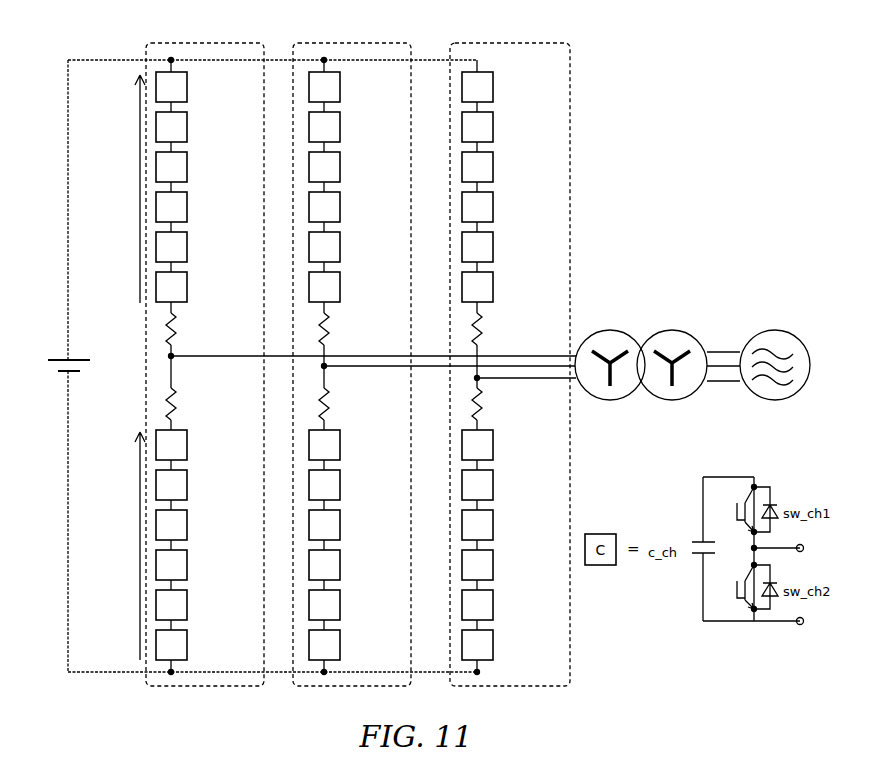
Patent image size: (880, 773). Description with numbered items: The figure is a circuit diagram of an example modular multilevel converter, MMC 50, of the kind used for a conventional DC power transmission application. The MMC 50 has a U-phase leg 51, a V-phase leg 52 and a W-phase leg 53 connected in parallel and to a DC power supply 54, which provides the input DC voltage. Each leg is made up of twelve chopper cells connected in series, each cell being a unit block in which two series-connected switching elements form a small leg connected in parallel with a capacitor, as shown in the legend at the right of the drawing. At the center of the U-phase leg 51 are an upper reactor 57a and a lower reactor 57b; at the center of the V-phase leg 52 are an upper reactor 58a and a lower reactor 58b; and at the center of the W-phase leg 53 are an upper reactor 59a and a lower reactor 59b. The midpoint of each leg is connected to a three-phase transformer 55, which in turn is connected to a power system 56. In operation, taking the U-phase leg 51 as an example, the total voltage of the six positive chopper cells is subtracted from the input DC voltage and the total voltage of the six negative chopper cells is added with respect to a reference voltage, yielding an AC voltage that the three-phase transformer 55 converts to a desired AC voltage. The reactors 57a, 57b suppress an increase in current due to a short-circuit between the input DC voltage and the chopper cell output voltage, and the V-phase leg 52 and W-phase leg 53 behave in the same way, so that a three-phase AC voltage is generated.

The MMC 50 is at (625, 65).
The U-phase leg 51 is at (179, 352).
The V-phase leg 52 is at (352, 352).
The W-phase leg 53 is at (510, 352).
The DC power supply 54 is at (63, 358).
The three-phase transformer 55 is at (641, 348).
The power system 56 is at (775, 348).
The reactor 57a is at (193, 332).
The reactor 57b is at (193, 404).
The reactor 58a is at (345, 332).
The reactor 58b is at (345, 404).
The reactor 59a is at (501, 332).
The reactor 59b is at (501, 405).